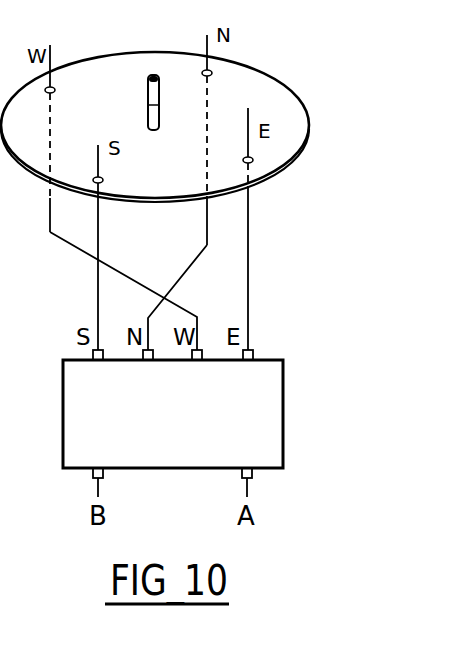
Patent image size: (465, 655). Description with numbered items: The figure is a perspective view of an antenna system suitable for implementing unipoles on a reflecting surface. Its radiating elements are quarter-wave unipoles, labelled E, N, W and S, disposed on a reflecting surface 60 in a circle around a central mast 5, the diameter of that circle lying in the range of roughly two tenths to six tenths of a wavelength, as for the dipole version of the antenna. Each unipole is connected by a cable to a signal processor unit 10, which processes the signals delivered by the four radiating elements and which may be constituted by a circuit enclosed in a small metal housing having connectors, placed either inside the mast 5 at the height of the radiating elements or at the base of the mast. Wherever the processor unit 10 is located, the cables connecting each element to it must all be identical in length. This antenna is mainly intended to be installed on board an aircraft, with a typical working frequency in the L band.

The central mast 5 is at (148, 105).
The signal processor unit 10 is at (283, 412).
The reflecting surface 60 is at (288, 135).